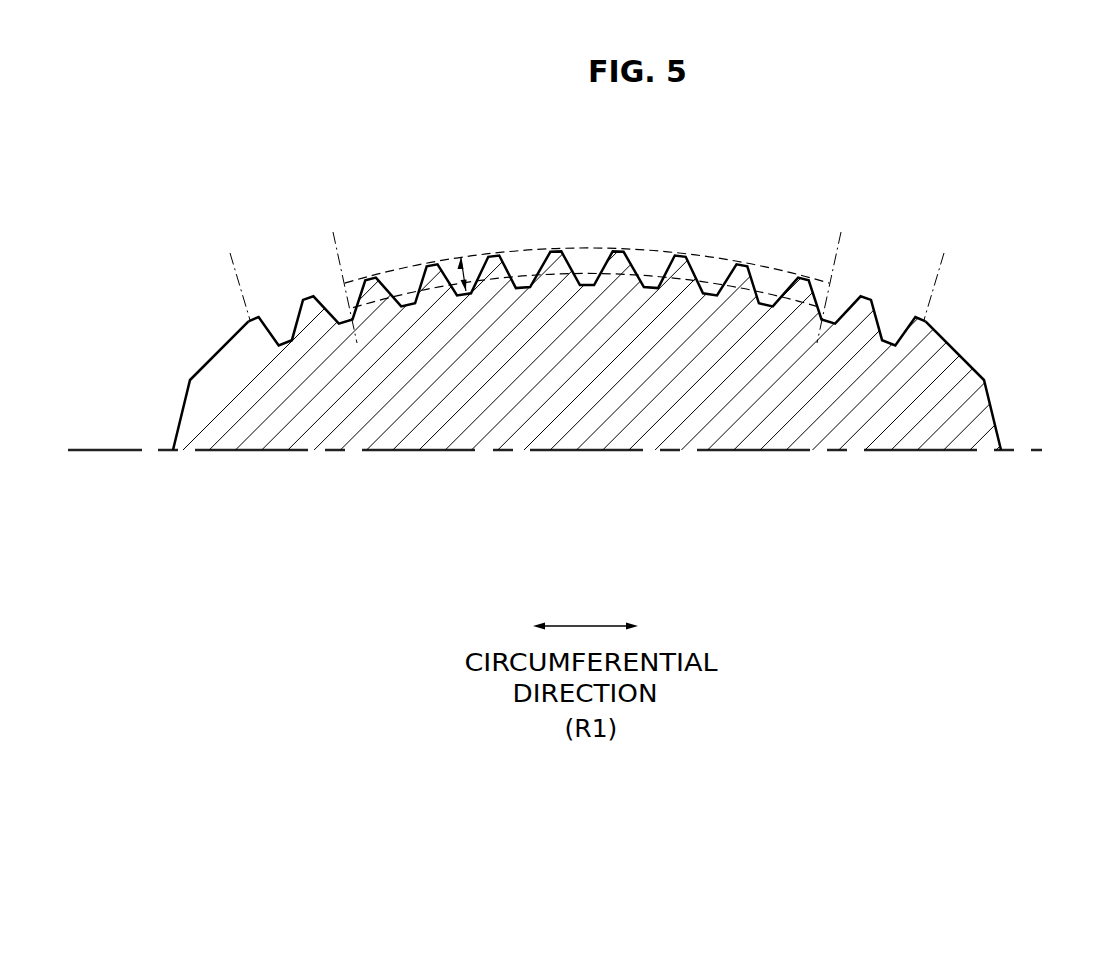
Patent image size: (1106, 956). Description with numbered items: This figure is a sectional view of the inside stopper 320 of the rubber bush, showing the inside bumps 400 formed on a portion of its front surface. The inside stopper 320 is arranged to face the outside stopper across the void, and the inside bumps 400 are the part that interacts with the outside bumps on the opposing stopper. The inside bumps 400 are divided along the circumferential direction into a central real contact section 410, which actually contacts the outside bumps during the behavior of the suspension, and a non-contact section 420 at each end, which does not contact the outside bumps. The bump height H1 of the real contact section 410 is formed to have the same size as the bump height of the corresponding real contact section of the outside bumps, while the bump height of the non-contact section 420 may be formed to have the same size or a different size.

The inside stopper 320 is at (738, 427).
The inside bumps 400 is at (620, 277).
The real contact section 410 is at (841, 244).
The non-contact section 420 is at (938, 278).
The bump height H1 is at (460, 278).